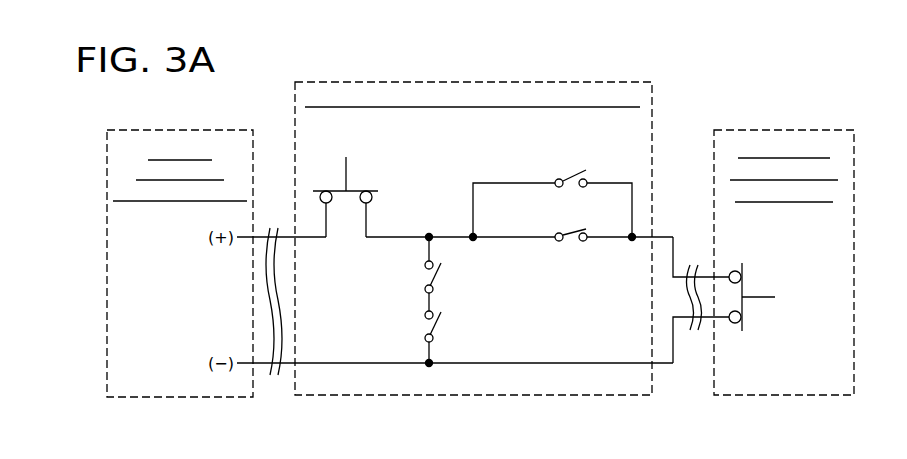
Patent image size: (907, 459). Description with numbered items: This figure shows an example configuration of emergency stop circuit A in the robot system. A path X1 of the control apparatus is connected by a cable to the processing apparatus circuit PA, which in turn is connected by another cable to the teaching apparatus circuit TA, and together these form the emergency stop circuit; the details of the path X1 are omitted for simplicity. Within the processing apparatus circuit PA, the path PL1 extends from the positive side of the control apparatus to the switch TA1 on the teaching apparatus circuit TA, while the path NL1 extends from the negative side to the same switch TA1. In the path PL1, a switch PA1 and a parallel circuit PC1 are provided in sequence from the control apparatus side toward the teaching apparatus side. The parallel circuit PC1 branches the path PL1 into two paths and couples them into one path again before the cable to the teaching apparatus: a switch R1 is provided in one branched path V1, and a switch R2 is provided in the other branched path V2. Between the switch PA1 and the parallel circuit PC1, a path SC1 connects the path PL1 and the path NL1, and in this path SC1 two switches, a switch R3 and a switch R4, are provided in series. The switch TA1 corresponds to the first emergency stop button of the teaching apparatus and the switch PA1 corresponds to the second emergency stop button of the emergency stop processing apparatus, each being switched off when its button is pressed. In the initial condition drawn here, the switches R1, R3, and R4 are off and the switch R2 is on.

The path X1 is at (186, 130).
The processing apparatus circuit PA is at (463, 82).
The teaching apparatus circuit TA is at (784, 130).
The switch PA1 is at (360, 170).
The path PL1 is at (407, 225).
The path NL1 is at (519, 352).
The parallel circuit PC1 is at (552, 210).
The switch R1 is at (583, 164).
The switch R2 is at (576, 252).
The path V1 is at (541, 191).
The path V2 is at (541, 246).
The path SC1 is at (436, 300).
The switch R3 is at (419, 277).
The switch R4 is at (419, 327).
The switch TA1 is at (758, 286).